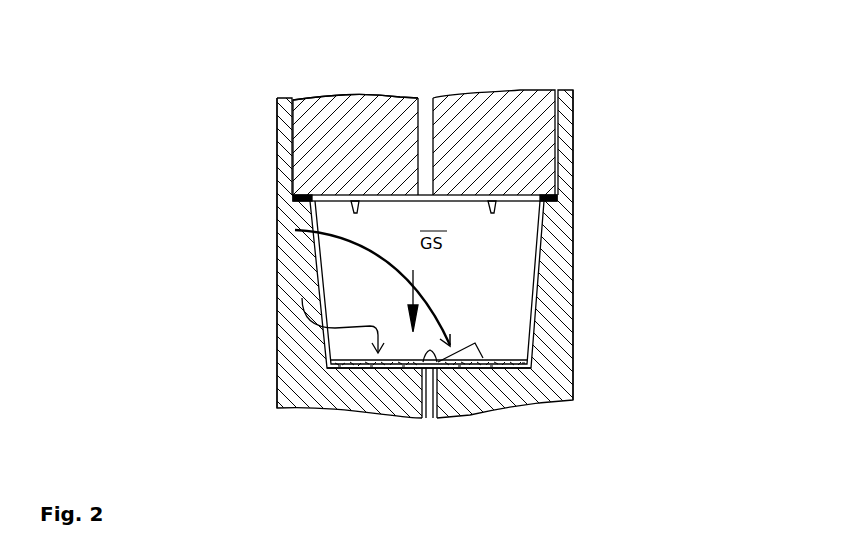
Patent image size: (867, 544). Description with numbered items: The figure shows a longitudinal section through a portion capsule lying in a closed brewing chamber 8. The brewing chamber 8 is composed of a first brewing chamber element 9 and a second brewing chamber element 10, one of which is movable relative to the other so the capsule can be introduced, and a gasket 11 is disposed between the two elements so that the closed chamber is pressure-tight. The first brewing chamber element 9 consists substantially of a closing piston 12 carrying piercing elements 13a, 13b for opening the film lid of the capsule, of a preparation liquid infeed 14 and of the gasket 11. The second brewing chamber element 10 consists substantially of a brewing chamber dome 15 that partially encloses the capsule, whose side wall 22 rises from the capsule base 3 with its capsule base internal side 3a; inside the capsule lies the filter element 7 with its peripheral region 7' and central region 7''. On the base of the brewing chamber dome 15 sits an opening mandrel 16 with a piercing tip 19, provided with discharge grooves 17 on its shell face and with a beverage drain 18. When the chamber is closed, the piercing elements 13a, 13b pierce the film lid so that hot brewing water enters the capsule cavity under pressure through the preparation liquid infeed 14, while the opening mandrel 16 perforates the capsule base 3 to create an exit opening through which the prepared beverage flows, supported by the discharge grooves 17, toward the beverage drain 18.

The brewing chamber 8 is at (542, 72).
The capsule base internal side 3a is at (630, 35).
The first brewing chamber element 9 is at (318, 96).
The closing piston 12 is at (460, 115).
The preparation liquid infeed 14 is at (428, 120).
The gasket 11 is at (557, 197).
The piercing element 13a is at (358, 203).
The piercing element 13b is at (495, 201).
The brewing chamber dome 15 is at (535, 293).
The second brewing chamber element 10 is at (576, 344).
The capsule base 3 is at (368, 365).
The filter element 7 is at (429, 410).
The peripheral region of the filter element 7' is at (339, 313).
The central region of the filter element 7'' is at (364, 281).
The opening mandrel 16 is at (422, 377).
The discharge grooves 17 is at (437, 383).
The beverage drain 18 is at (433, 367).
The piercing tip 19 is at (487, 363).
The side wall 22 is at (400, 297).